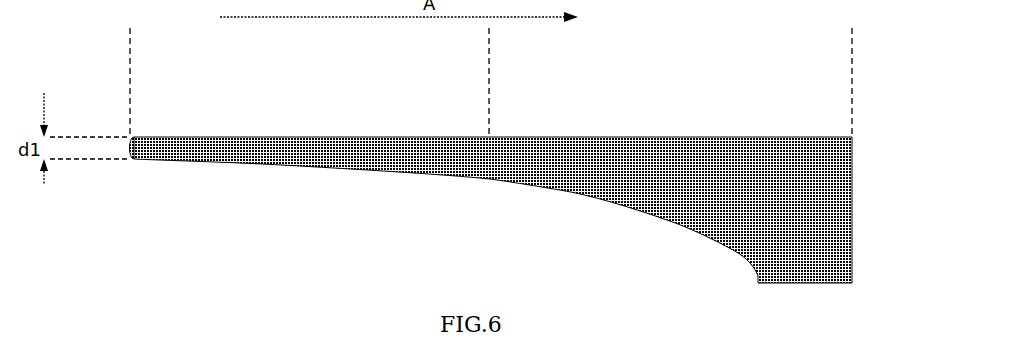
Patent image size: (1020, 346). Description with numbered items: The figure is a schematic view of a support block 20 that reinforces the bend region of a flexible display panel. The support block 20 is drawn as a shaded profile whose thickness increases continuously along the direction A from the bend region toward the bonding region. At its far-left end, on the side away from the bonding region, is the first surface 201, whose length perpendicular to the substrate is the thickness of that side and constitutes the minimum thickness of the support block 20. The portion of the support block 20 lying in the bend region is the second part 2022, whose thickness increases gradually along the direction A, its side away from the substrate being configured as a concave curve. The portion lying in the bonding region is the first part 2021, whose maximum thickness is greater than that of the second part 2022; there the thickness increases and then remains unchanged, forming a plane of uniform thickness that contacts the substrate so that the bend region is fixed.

The support block 20 is at (826, 208).
The first surface 201 is at (130, 137).
The first part 2021 is at (852, 77).
The second part 2022 is at (489, 77).